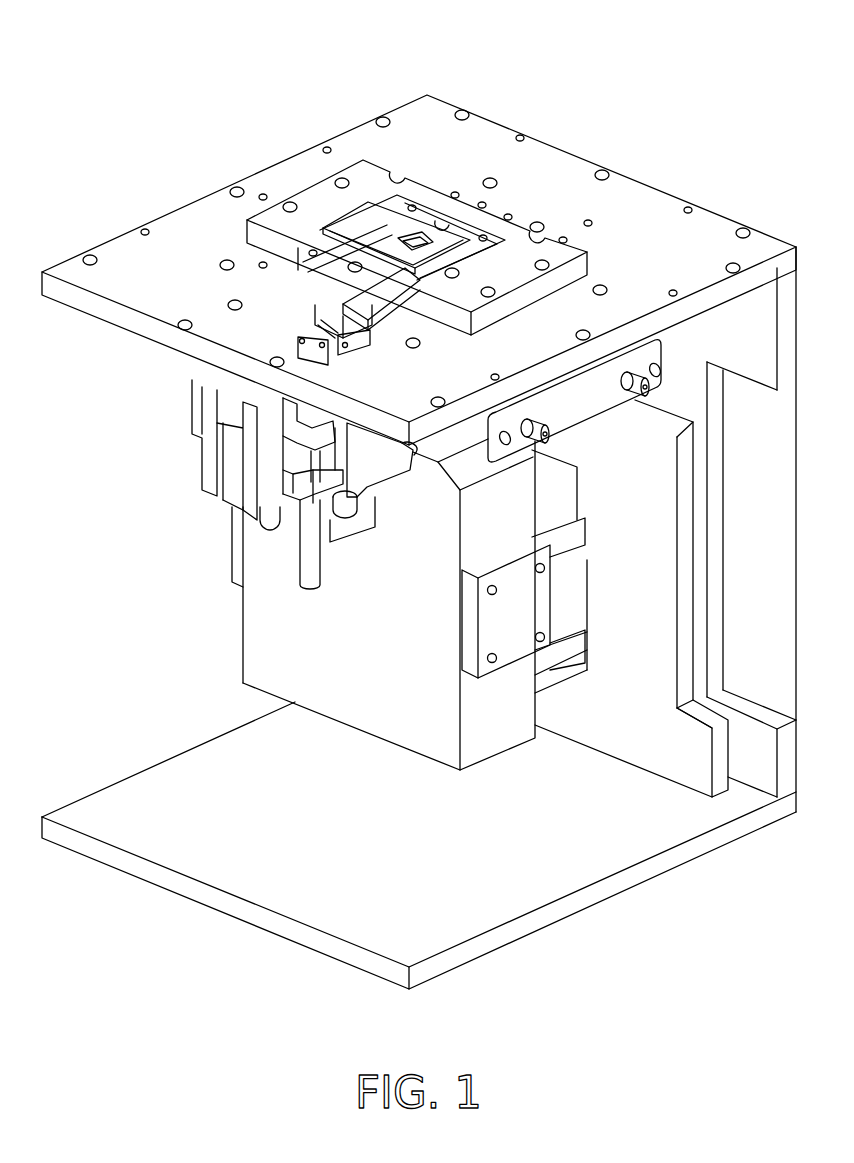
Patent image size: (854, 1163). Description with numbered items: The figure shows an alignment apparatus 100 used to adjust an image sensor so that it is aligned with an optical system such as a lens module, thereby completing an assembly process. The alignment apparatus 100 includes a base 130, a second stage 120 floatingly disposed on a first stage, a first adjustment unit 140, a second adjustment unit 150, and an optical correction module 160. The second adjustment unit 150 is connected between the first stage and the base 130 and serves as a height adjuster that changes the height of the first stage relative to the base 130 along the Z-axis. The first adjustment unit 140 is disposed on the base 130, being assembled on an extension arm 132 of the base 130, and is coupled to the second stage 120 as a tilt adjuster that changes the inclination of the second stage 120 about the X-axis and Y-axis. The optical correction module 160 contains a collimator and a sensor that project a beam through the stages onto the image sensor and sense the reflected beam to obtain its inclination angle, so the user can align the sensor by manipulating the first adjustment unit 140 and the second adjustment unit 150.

The alignment apparatus 100 is at (737, 50).
The second stage 120 is at (330, 257).
The base 130 is at (715, 612).
The extension arm 132 is at (643, 228).
The first adjustment unit 140 is at (590, 408).
The second adjustment unit 150 is at (232, 470).
The optical correction module 160 is at (275, 648).